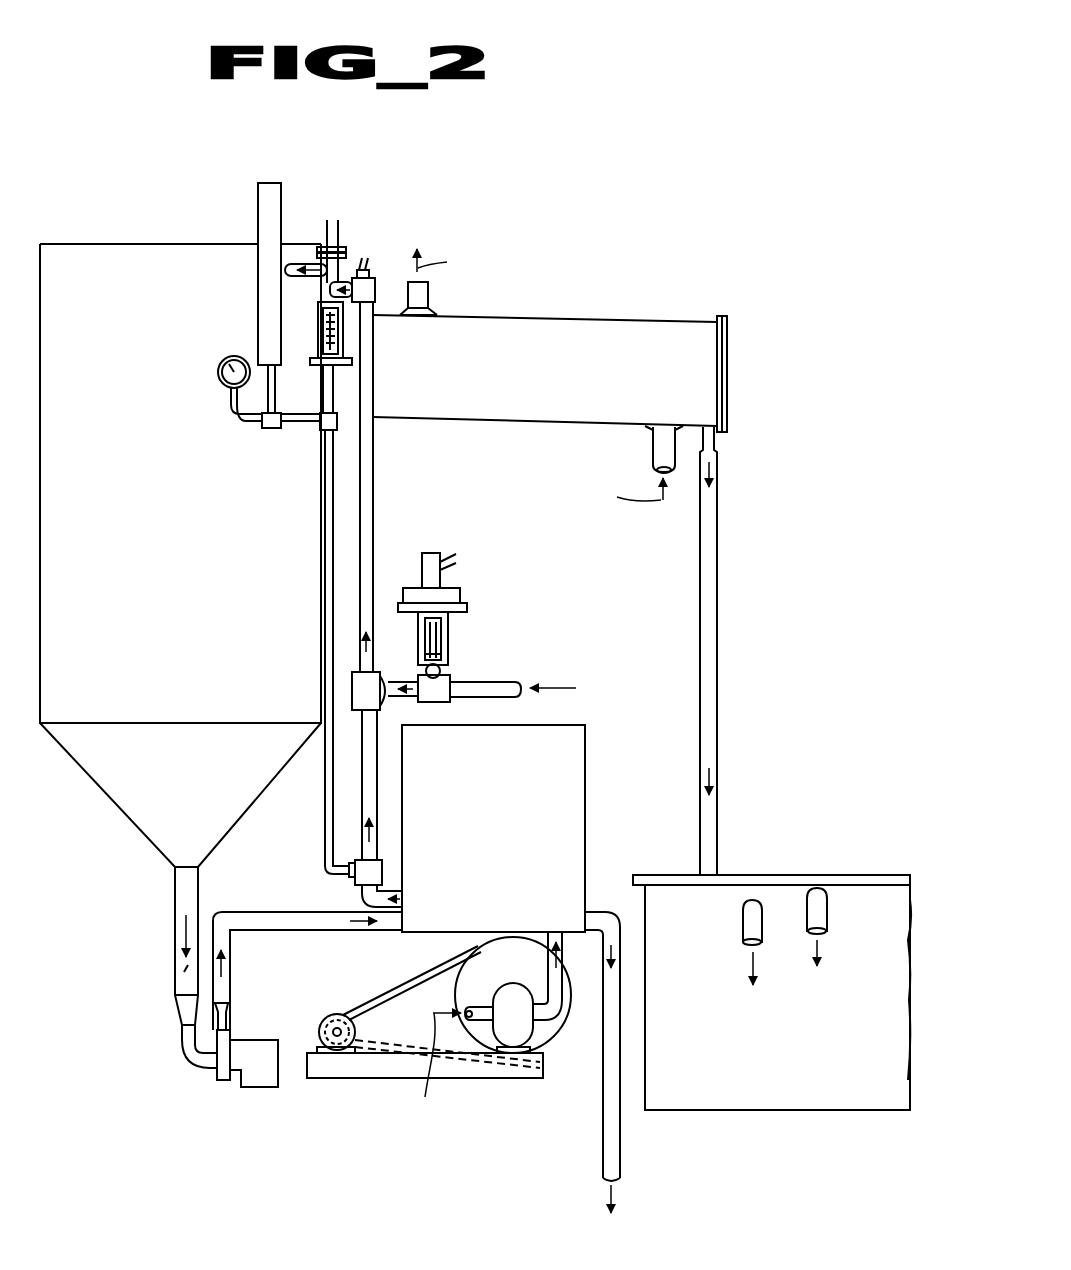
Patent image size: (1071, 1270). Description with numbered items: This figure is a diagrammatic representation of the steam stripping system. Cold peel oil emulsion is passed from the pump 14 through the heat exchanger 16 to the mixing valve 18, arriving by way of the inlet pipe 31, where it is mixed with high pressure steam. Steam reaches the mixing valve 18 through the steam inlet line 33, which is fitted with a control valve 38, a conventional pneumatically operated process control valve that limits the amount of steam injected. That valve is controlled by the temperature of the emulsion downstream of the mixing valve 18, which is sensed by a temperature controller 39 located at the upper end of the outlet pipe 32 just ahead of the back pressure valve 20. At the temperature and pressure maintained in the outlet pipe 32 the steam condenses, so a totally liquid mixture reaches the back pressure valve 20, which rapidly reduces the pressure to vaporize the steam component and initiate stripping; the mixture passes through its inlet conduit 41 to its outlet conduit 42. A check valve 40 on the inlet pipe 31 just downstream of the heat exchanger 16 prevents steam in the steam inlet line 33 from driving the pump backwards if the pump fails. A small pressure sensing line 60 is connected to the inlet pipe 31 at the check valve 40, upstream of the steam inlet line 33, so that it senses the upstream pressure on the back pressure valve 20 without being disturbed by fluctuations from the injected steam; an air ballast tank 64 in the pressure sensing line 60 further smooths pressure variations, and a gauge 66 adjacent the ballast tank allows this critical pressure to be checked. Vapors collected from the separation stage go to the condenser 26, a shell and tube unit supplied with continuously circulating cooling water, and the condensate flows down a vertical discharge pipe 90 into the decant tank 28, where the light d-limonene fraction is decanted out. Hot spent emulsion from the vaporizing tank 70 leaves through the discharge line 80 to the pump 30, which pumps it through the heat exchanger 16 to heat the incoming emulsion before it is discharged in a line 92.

The pump 14 is at (525, 1023).
The heat exchanger 16 is at (500, 883).
The mixing valve 18 is at (352, 693).
The back pressure valve 20 is at (344, 242).
The condenser 26 is at (707, 371).
The decant tank 28 is at (692, 1098).
The pump 30 is at (261, 1074).
The inlet pipe 31 is at (362, 784).
The outlet pipe 32 is at (374, 524).
The steam inlet line 33 is at (401, 681).
The control valve 38 is at (448, 590).
The temperature controller 39 is at (375, 278).
The check valve 40 is at (362, 875).
The inlet conduit 41 is at (330, 290).
The outlet conduit 42 is at (298, 263).
The pressure sensing line 60 is at (323, 390).
The air ballast tank 64 is at (258, 212).
The gauge 66 is at (229, 357).
The vaporizing tank 70 is at (180, 552).
The discharge line 80 is at (175, 893).
The vertical discharge pipe 90 is at (716, 592).
The line 92 is at (606, 1161).